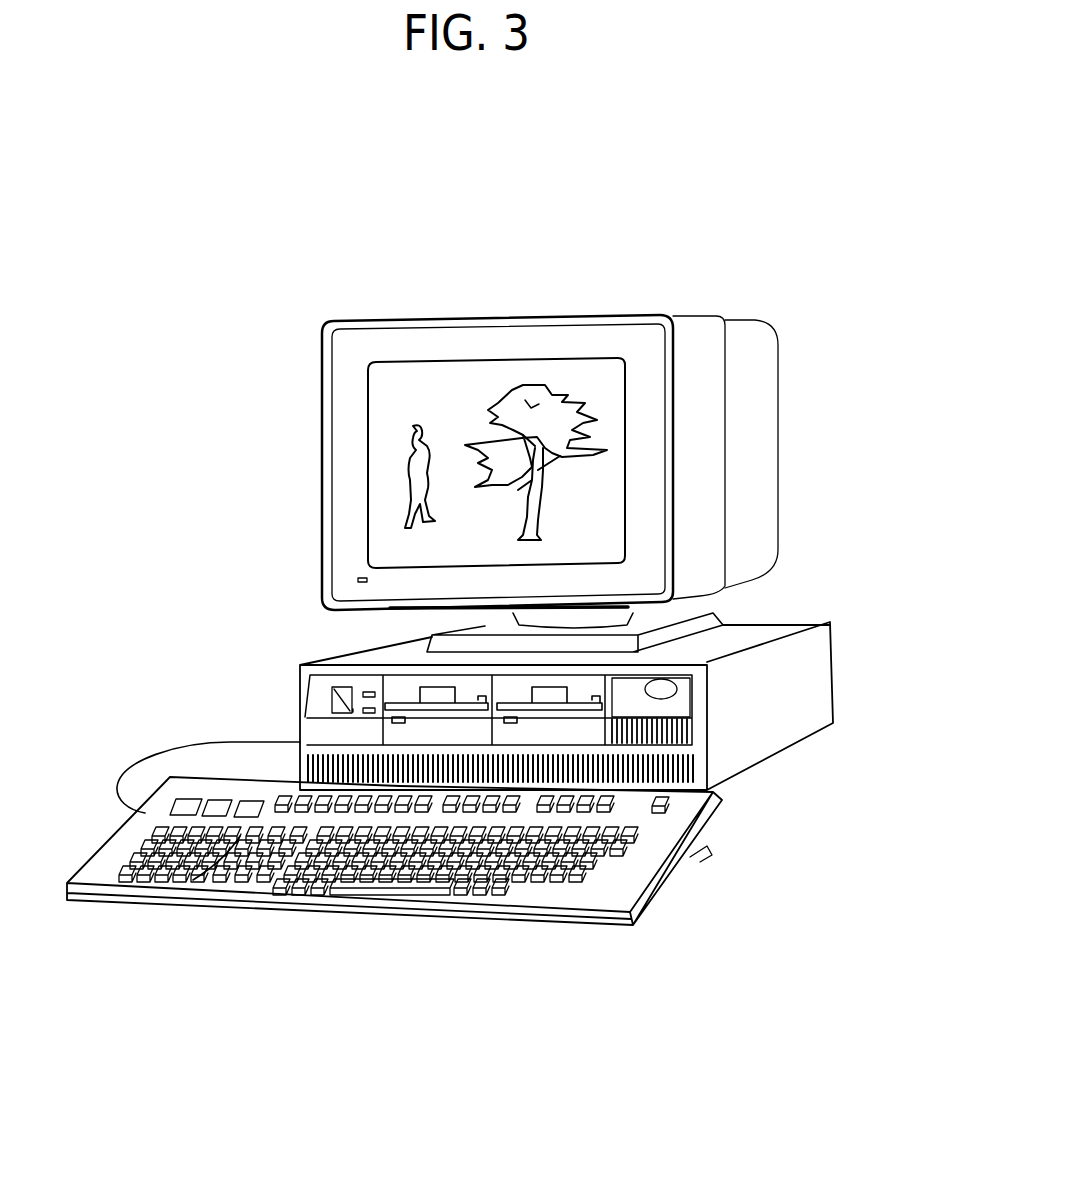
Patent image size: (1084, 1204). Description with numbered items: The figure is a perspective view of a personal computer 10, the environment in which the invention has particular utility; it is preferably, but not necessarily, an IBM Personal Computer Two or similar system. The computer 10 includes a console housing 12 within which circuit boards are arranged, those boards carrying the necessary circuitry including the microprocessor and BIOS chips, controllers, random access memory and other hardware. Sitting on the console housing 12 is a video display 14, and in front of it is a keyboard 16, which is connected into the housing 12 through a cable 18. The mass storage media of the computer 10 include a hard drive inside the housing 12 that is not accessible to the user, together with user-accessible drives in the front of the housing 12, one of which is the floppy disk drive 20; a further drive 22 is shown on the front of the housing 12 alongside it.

The computer system 10 is at (221, 505).
The system unit 12 is at (750, 718).
The display monitor 14 is at (778, 378).
The keyboard 16 is at (543, 923).
The keyboard cable 18 is at (187, 747).
The disk drive 20 is at (580, 690).
The disk drive 22 is at (443, 692).